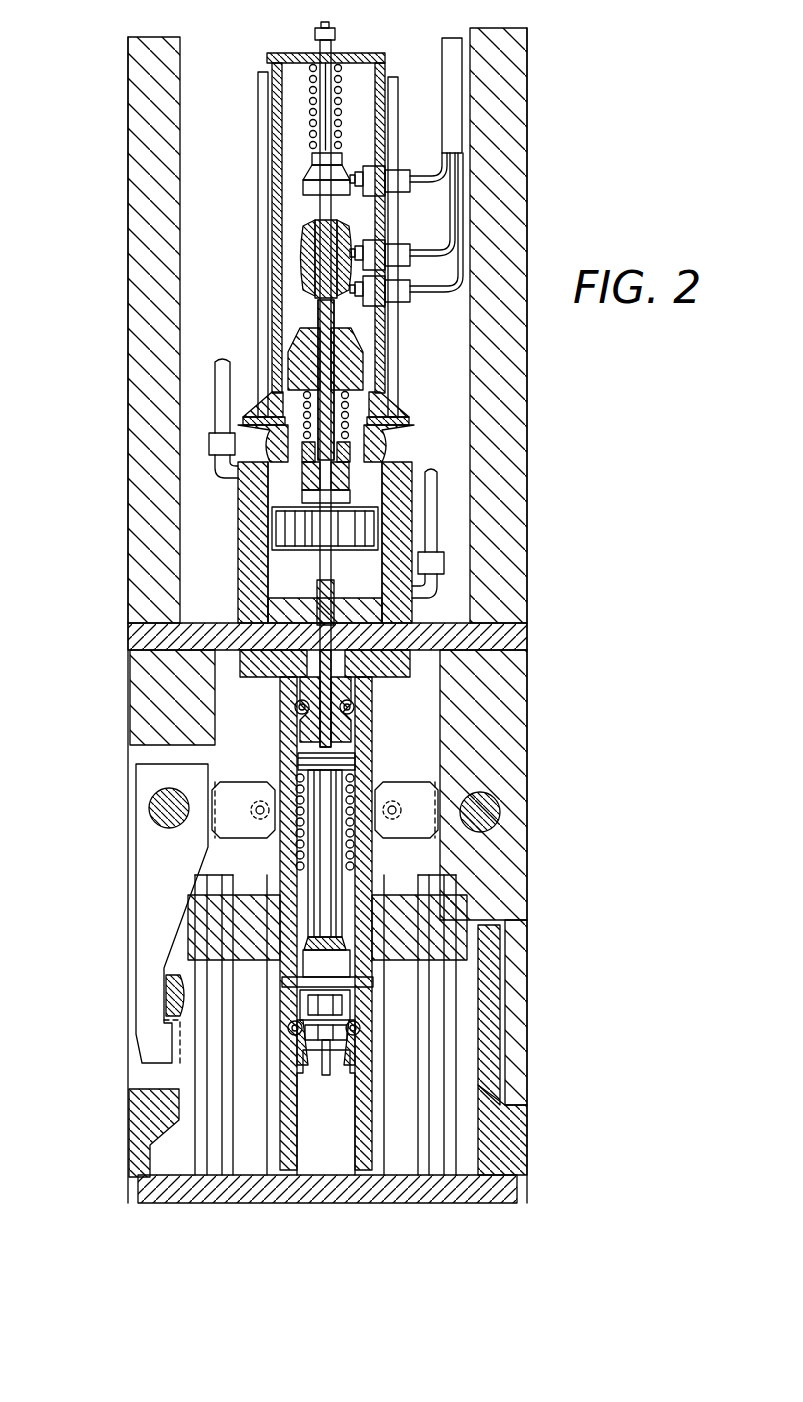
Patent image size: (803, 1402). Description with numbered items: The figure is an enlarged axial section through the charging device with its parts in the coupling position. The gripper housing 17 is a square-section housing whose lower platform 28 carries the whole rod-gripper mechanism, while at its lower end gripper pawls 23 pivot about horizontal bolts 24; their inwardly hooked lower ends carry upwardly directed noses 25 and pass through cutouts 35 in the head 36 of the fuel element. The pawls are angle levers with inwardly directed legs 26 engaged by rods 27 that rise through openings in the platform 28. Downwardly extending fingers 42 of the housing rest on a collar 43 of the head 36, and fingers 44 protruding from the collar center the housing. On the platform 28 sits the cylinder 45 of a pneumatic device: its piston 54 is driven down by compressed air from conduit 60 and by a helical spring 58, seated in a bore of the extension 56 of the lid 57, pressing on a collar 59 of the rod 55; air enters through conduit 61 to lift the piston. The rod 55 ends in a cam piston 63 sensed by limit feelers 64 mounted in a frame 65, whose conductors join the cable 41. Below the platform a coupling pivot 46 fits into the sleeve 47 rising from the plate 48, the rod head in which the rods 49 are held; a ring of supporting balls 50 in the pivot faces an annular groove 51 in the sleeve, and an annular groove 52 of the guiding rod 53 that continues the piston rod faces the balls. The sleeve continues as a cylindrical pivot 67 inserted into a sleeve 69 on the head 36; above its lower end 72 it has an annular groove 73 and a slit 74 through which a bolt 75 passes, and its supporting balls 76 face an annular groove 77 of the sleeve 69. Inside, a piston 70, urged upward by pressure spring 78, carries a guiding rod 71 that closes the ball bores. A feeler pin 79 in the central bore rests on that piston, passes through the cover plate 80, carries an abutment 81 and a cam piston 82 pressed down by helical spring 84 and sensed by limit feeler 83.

The gripper housing 17 is at (132, 318).
The gripper pawls 23 is at (140, 920).
The bolts 24 is at (158, 810).
The noses 25 is at (168, 992).
The legs 26 is at (256, 824).
The rods 27 is at (268, 115).
The lower platform 28 is at (514, 638).
The cutouts 35 is at (172, 1068).
The head of fuel element 36 is at (142, 1188).
The cable 41 is at (442, 118).
The fingers 42 is at (505, 1030).
The collar 43 is at (510, 1140).
The fingers 44 is at (490, 970).
The cylinder 45 is at (248, 566).
The coupling pivot 46 is at (350, 686).
The sleeve 47 is at (285, 749).
The plate 48 is at (465, 916).
The rods 49 is at (200, 1135).
The supporting balls 50 is at (352, 707).
The annular groove 51 is at (297, 705).
The annular groove 52 is at (300, 720).
The guiding rod 53 is at (350, 730).
The piston 54 is at (366, 542).
The rod 55 is at (318, 303).
The extension 56 is at (357, 355).
The lid 57 is at (405, 437).
The helical spring 58 is at (350, 400).
The collar 59 is at (310, 468).
The conduit 60 is at (218, 366).
The conduit 61 is at (432, 475).
The cam piston 63 is at (302, 235).
The limit feelers 64 is at (380, 290).
The frame 65 is at (281, 140).
The cylindrical pivot 67 is at (350, 1003).
The sleeve 69 is at (358, 1130).
The piston 70 is at (345, 763).
The guiding rod 71 is at (332, 858).
The lower end 72 is at (326, 1033).
The annular groove 73 is at (300, 1005).
The slit 74 is at (332, 967).
The bolt 75 is at (286, 982).
The supporting balls 76 is at (360, 1028).
The annular groove 77 is at (289, 1028).
The pressure spring 78 is at (300, 848).
The feeler pin 79 is at (333, 50).
The cover plate 80 is at (378, 60).
The abutment 81 is at (315, 34).
The cam piston 82 is at (303, 190).
The limit feeler 83 is at (372, 168).
The helical spring 84 is at (309, 90).